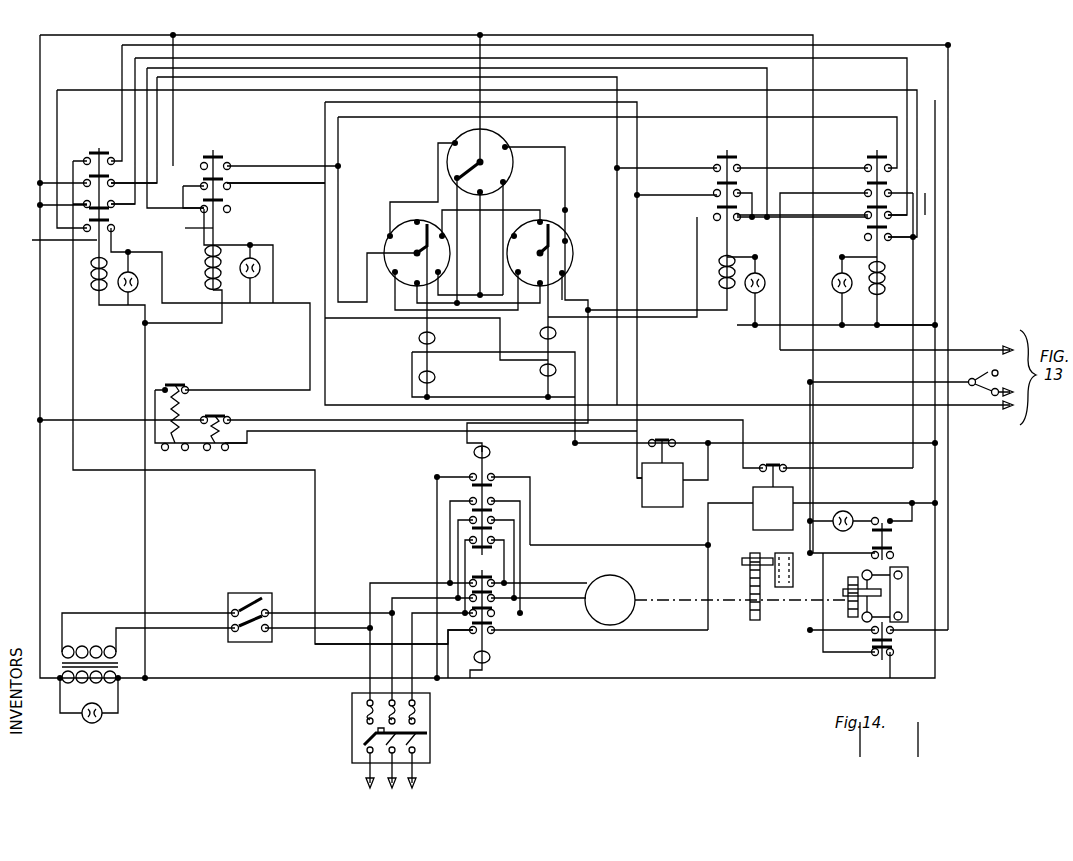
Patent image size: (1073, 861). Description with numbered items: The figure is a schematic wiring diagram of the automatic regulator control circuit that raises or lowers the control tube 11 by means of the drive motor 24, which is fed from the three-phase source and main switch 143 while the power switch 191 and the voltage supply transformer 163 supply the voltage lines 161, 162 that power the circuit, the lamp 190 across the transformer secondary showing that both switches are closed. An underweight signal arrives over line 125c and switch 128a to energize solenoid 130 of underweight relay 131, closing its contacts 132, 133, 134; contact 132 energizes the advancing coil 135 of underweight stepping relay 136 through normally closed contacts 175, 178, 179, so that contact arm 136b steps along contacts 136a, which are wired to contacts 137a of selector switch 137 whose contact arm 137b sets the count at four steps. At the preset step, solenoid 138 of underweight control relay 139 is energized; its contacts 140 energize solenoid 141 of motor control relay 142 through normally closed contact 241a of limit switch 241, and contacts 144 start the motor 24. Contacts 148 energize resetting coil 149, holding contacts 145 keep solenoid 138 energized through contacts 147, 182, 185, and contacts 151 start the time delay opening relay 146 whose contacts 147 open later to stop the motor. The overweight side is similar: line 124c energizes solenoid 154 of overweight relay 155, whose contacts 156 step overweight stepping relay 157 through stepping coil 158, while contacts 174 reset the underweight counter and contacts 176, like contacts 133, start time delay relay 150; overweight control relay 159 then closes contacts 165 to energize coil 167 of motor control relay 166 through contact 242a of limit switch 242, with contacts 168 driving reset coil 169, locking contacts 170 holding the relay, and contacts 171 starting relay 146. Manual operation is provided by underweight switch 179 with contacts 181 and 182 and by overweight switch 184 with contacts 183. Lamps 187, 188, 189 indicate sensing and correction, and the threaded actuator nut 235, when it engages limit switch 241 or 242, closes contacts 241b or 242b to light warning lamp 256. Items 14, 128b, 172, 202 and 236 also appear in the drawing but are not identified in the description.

The control tube 11 is at (775, 555).
The rack 14 is at (750, 578).
The drive motor 24 is at (622, 590).
The line 124c is at (957, 414).
The line 125c is at (963, 350).
The switch 128a is at (899, 371).
The switch contact 128b is at (1012, 382).
The solenoid 130 is at (727, 302).
The underweight relay 131 is at (716, 258).
The contact 132 is at (739, 219).
The contacts 133 is at (716, 194).
The contact 134 is at (738, 166).
The advancing coil 135 is at (540, 333).
The underweight stepping relay 136 is at (567, 241).
The contacts 136a is at (563, 273).
The contact arm 136b is at (542, 224).
The selector switch 137 is at (504, 166).
The contacts 137a is at (506, 146).
The contact arm 137b is at (478, 162).
The solenoid 138 is at (885, 280).
The underweight control relay 139 is at (878, 296).
The contacts 140 is at (867, 192).
The solenoid 141 is at (491, 452).
The underweight motor control relay 142 is at (493, 477).
The three-phase voltage source 143 is at (430, 716).
The contacts 144 is at (494, 540).
The holding contacts 145 is at (889, 240).
The time delay opening relay 146 is at (794, 494).
The contacts 147 is at (760, 470).
The contacts 148 is at (889, 165).
The resetting coil 149 is at (540, 371).
The time delay relay 150 is at (642, 496).
The contacts 151 is at (472, 478).
The solenoid 154 is at (216, 255).
The overweight relay 155 is at (181, 229).
The contacts 156 is at (229, 210).
The overweight stepping relay 157 is at (388, 238).
The stepping coil 158 is at (95, 305).
The overweight control relay 159 is at (49, 240).
The voltage line 161 is at (580, 35).
The voltage line 162 is at (935, 244).
The voltage supply transformer 163 is at (118, 665).
The contacts 165 is at (87, 160).
The overweight motor control relay 166 is at (478, 672).
The coil 167 is at (491, 657).
The contacts 168 is at (113, 182).
The reset coil 169 is at (435, 378).
The locking contacts 170 is at (112, 230).
The contacts 171 is at (493, 631).
The relay contacts 172 is at (494, 598).
The contacts 174 is at (228, 165).
The contacts 175 is at (670, 440).
The contacts 176 is at (229, 186).
The normally closed contacts 178 is at (867, 212).
The underweight switch 179 is at (112, 205).
The contacts 181 is at (209, 420).
The normally closed contacts 182 is at (213, 452).
The contacts 183 is at (166, 385).
The manual overweight switch 184 is at (188, 390).
The normally closed contacts 185 is at (172, 452).
The indicator lamp 187 is at (261, 266).
The lamp 188 is at (842, 272).
The lamp 189 is at (138, 282).
The lamp 190 is at (100, 720).
The power switch 191 is at (258, 593).
The shaft 202 is at (725, 604).
The threaded actuator nut 235 is at (882, 593).
The gear 236 is at (846, 605).
The underweight limit switch 241 is at (884, 536).
The normally closed contact 241a is at (892, 556).
The contacts 241b is at (891, 518).
The overweight limit switch 242 is at (892, 642).
The normally closed contacts 242a is at (892, 652).
The contacts 242b is at (890, 668).
The warning lamp 256 is at (845, 510).